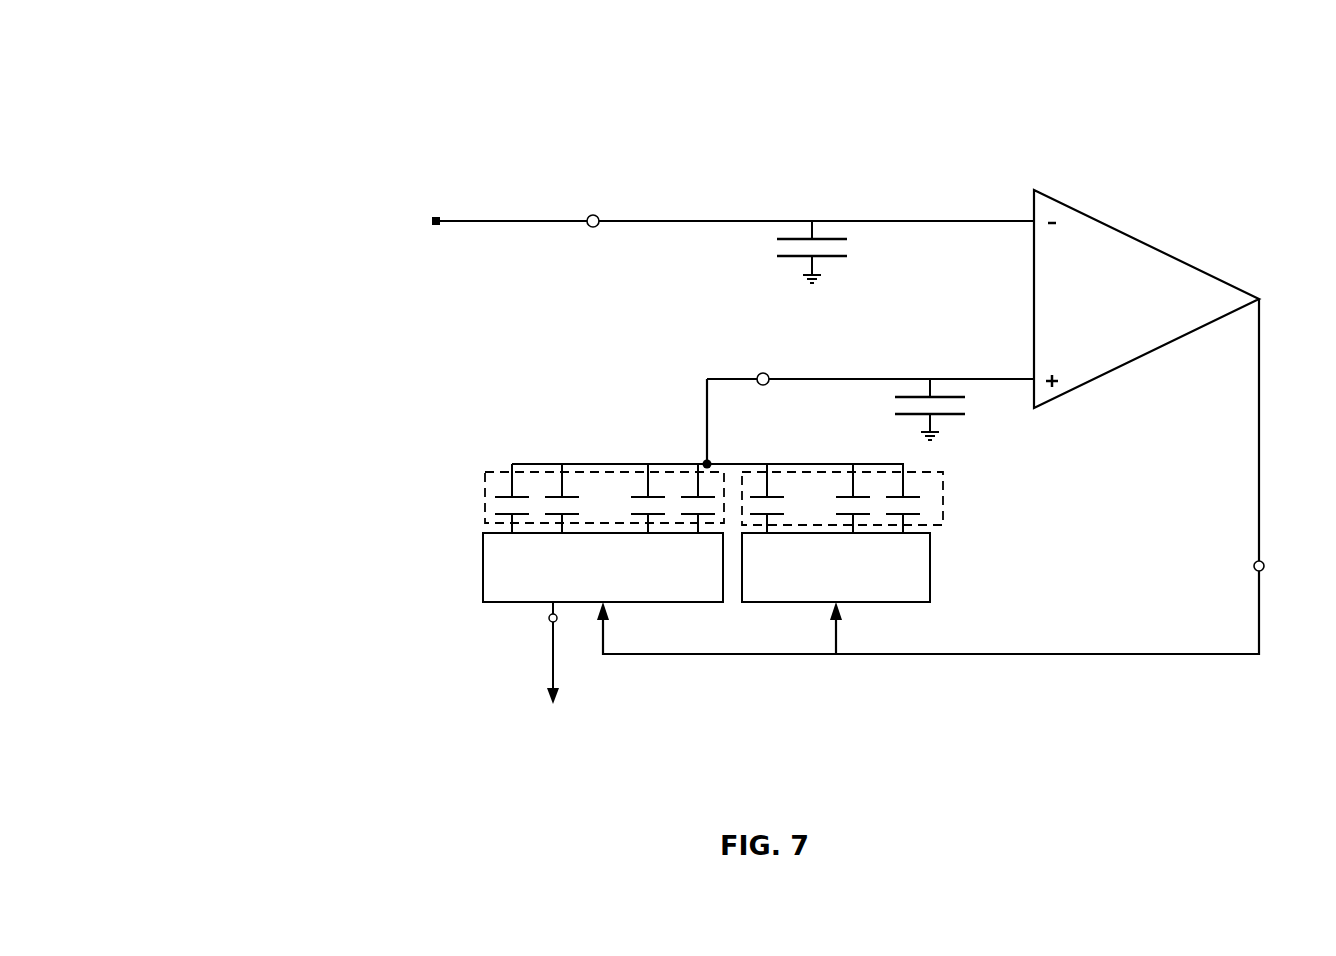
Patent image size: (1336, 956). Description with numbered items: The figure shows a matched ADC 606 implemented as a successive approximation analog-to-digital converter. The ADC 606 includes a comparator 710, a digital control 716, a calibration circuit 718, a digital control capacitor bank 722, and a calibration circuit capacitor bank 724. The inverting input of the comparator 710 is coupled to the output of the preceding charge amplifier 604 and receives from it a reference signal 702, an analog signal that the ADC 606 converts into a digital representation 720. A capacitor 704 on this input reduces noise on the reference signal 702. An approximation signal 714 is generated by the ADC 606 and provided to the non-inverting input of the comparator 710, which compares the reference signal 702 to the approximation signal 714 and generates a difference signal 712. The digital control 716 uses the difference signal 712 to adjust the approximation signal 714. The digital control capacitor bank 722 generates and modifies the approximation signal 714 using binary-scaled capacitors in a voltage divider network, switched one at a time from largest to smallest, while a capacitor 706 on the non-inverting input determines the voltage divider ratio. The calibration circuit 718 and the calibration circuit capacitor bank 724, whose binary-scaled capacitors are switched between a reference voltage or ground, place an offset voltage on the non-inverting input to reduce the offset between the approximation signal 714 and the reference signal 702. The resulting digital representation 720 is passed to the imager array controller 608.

The matched ADC 606 is at (297, 106).
The charge amplifier 604 is at (409, 221).
The reference signal 702 is at (594, 215).
The capacitor 704 is at (815, 252).
The capacitor 706 is at (939, 409).
The comparator 710 is at (1144, 243).
The difference signal 712 is at (1264, 566).
The approximation signal 714 is at (765, 373).
The digital control 716 is at (503, 602).
The calibration circuit 718 is at (762, 602).
The digital representation 720 is at (549, 618).
The digital control capacitor bank 722 is at (500, 472).
The calibration circuit capacitor bank 724 is at (761, 472).
The imager array controller 608 is at (553, 737).